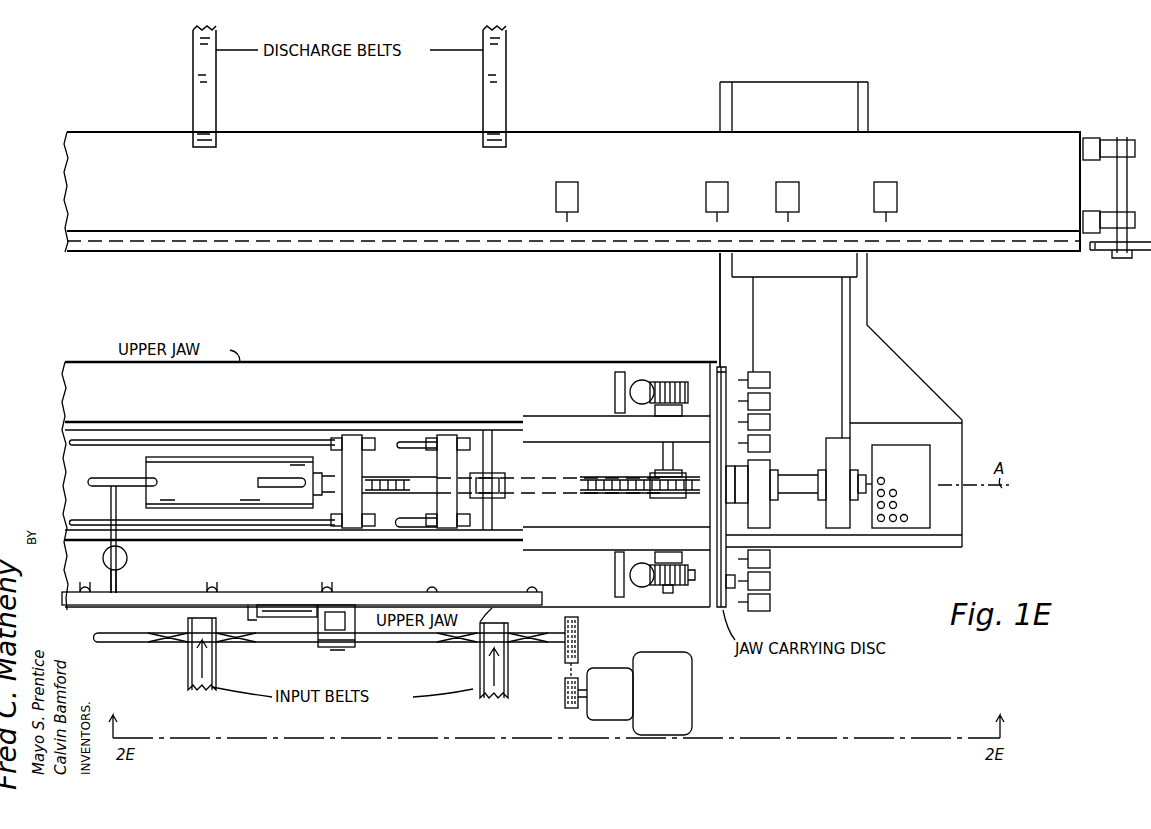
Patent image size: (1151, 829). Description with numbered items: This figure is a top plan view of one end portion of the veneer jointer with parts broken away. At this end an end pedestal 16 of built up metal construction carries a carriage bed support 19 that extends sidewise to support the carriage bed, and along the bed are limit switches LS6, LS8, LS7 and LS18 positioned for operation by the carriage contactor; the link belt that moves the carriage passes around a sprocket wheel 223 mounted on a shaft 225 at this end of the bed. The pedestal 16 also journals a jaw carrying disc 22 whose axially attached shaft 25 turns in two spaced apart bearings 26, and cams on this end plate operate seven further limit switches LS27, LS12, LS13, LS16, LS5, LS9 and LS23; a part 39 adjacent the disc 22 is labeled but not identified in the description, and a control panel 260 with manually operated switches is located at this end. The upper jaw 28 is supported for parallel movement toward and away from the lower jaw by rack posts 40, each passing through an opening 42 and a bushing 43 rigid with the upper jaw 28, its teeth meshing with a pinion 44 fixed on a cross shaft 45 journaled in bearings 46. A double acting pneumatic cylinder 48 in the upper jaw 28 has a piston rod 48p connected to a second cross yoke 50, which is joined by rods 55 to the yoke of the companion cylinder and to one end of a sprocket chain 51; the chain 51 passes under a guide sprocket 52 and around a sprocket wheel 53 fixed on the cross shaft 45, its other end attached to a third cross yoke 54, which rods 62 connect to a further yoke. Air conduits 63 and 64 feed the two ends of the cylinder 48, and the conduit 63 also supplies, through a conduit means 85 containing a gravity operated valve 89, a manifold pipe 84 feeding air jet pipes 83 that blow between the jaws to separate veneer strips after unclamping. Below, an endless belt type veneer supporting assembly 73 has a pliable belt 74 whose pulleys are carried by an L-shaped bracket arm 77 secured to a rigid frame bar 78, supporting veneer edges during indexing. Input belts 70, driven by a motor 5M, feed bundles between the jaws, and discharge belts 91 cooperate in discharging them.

The discharge belts 91 is at (205, 97).
The carriage bed support 19 is at (790, 92).
The limit switch LS6 is at (580, 194).
The limit switch LS8 is at (713, 194).
The limit switch LS7 is at (799, 196).
The limit switch LS18 is at (902, 178).
The shaft 225 is at (1122, 186).
The sprocket wheel 223 is at (1122, 255).
The end pedestal 16 is at (961, 516).
The upper jaw 28 is at (388, 353).
The rods 55 is at (82, 518).
The double acting pneumatic cylinder 48 is at (205, 498).
The piston rod 48p is at (327, 478).
The air conduit 64 is at (285, 488).
The air conduit 63 is at (135, 486).
The gravity operated valve 89 is at (96, 552).
The conduit means 85 is at (118, 548).
The second cross yoke 50 is at (353, 518).
The third cross yoke 54 is at (442, 525).
The rods 62 is at (416, 518).
The sprocket chain 51 is at (393, 493).
The guide sprocket 52 is at (506, 490).
The sprocket wheel 53 is at (628, 480).
The bushing 43 is at (620, 378).
The rack post 40 is at (642, 382).
The pinion 44 is at (684, 404).
The bearings 46 is at (662, 418).
The opening 42 is at (667, 593).
The cross shaft 45 is at (690, 585).
The jaw carrying disc 39 is at (712, 380).
The jaw carrying disc 22 is at (720, 366).
The limit switch LS27 is at (763, 375).
The limit switch LS12 is at (763, 400).
The limit switch LS13 is at (763, 422).
The limit switch LS16 is at (766, 444).
The limit switch LS5 is at (770, 558).
The limit switch LS9 is at (768, 580).
The limit switch LS23 is at (770, 602).
The bearings 26 is at (830, 505).
The shaft 25 is at (796, 482).
The control panel 260 is at (949, 449).
The pliable endless belt 74 is at (335, 606).
The manifold pipe 84 is at (176, 600).
The air jet pipes 83 is at (324, 590).
The L-shaped bracket arm 77 is at (354, 652).
The rigid frame bar 78 is at (292, 617).
The endless belt type veneer supporting assembly 73 is at (350, 660).
The input belts 70 is at (190, 668).
The motor 5M is at (686, 689).